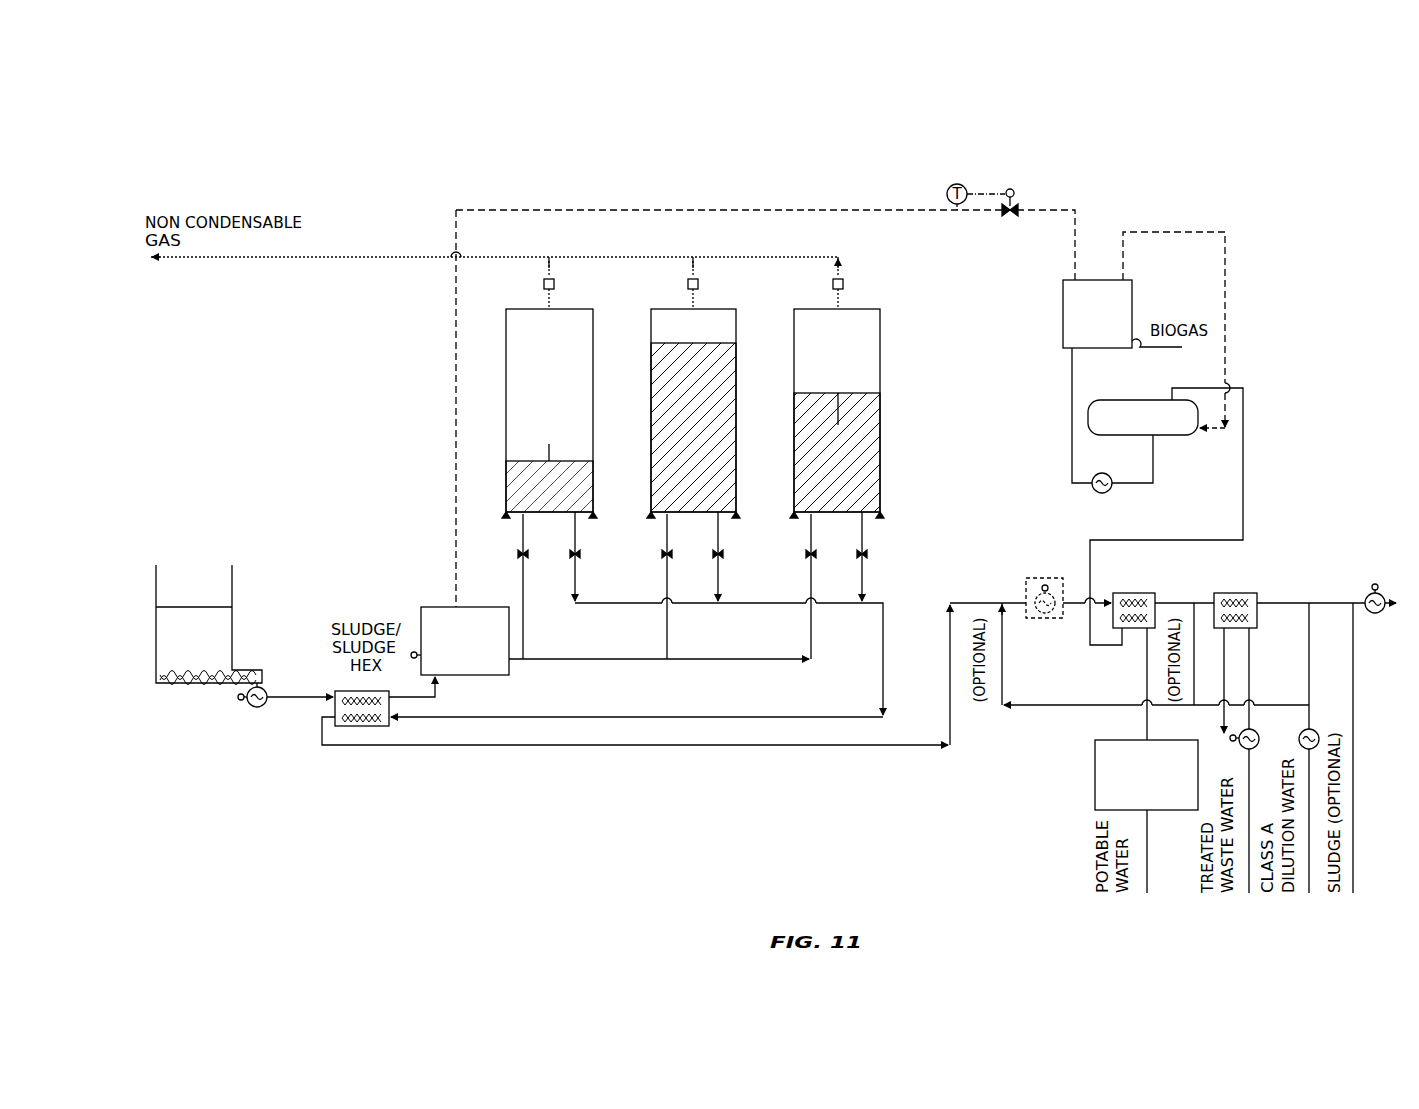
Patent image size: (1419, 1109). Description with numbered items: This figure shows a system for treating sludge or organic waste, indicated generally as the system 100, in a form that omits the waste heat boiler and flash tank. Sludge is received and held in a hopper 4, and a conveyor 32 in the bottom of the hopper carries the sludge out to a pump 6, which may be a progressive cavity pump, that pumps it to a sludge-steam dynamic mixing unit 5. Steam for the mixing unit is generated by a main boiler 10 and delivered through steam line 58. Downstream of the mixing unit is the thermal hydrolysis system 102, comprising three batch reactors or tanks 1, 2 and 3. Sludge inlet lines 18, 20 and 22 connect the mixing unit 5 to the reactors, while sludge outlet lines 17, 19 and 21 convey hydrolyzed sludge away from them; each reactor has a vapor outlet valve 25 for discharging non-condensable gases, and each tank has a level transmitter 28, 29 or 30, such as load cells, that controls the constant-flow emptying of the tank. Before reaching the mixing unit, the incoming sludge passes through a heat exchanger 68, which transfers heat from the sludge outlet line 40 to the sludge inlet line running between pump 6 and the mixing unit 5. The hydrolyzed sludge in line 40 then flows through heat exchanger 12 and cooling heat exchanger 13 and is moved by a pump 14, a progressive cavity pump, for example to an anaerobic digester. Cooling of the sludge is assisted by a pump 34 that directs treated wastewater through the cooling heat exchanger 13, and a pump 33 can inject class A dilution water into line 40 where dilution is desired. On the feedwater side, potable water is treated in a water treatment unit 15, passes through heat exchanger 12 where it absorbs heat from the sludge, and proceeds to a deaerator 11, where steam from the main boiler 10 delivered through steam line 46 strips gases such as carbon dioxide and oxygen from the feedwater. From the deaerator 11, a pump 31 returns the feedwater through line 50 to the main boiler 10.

The system for treating sludge 100 is at (403, 156).
The thermal hydrolysis system 102 is at (637, 225).
The steam line 58 is at (860, 210).
The steam line 46 is at (1178, 232).
The main boiler 10 is at (1097, 314).
The deaerator 11 is at (1165, 511).
The line 50 is at (1074, 380).
The pump 31 is at (1122, 464).
The vapor outlet valve 25 is at (680, 292).
The reactor 1 is at (837, 413).
The reactor 2 is at (693, 413).
The reactor 3 is at (549, 413).
The level transmitter 28 is at (836, 585).
The level transmitter 29 is at (694, 585).
The level transmitter 30 is at (550, 585).
The sludge outlet line 17 is at (850, 556).
The sludge inlet line 18 is at (797, 556).
The sludge outlet line 19 is at (705, 556).
The sludge inlet line 20 is at (653, 556).
The sludge outlet line 21 is at (562, 556).
The sludge inlet line 22 is at (508, 556).
The hopper 4 is at (209, 624).
The conveyor 32 is at (201, 701).
The pump 6 is at (252, 707).
The sludge-steam dynamic mixing unit 5 is at (460, 630).
The heat exchanger 68 is at (335, 705).
The pump 14 is at (1191, 601).
The heat exchanger 12 is at (1147, 604).
The cooling heat exchanger 13 is at (1251, 599).
The sludge outlet line 40 is at (1300, 603).
The water treatment unit 15 is at (1146, 760).
The pump 34 is at (1257, 760).
The pump 33 is at (1318, 748).